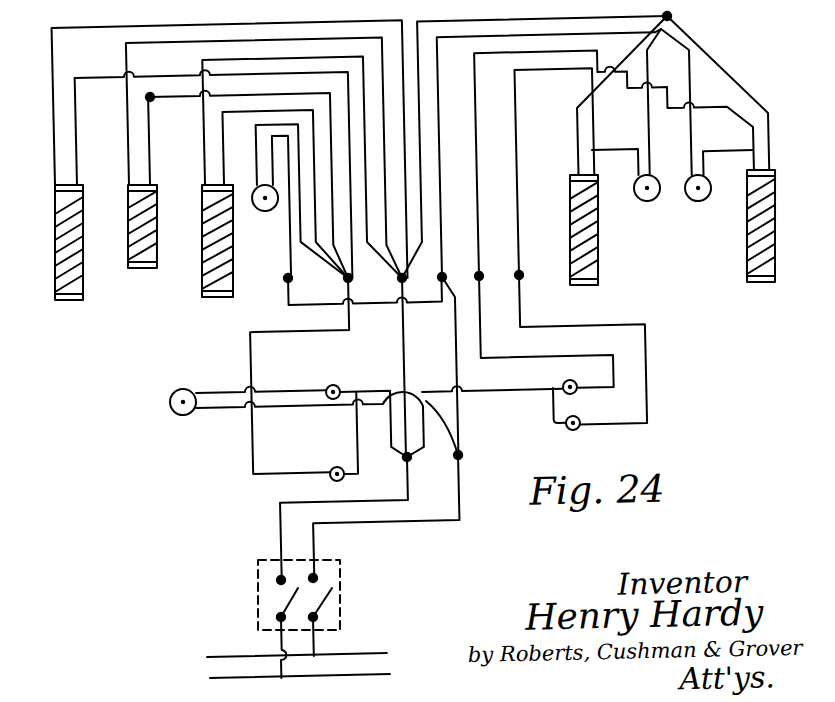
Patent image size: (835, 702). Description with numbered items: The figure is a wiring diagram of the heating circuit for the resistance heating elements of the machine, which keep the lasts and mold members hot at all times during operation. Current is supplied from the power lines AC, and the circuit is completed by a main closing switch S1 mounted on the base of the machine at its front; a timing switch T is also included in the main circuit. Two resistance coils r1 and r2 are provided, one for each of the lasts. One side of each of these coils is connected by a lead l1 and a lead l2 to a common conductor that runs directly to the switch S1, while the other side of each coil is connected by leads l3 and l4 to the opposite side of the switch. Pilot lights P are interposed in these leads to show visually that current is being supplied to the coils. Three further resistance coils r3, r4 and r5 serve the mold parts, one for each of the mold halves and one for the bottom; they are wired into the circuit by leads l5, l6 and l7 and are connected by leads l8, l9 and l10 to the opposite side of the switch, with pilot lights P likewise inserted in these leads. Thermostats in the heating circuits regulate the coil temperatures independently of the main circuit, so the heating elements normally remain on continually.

The lead l1 is at (582, 162).
The lead l2 is at (734, 82).
The lead l3 is at (598, 122).
The lead l4 is at (734, 129).
The lead l5 is at (134, 128).
The lead l6 is at (56, 126).
The lead l7 is at (214, 130).
The lead l8 is at (91, 146).
The lead l9 is at (260, 128).
The lead l10 is at (148, 158).
The resistance coil r1 is at (600, 286).
The resistance coil r2 is at (748, 274).
The resistance coil r3 is at (84, 288).
The resistance coil r4 is at (234, 294).
The resistance coil r5 is at (156, 261).
The timing switch T is at (180, 410).
The pilot light P is at (330, 400).
The main closing switch S1 is at (336, 607).
The power lines AC is at (404, 632).